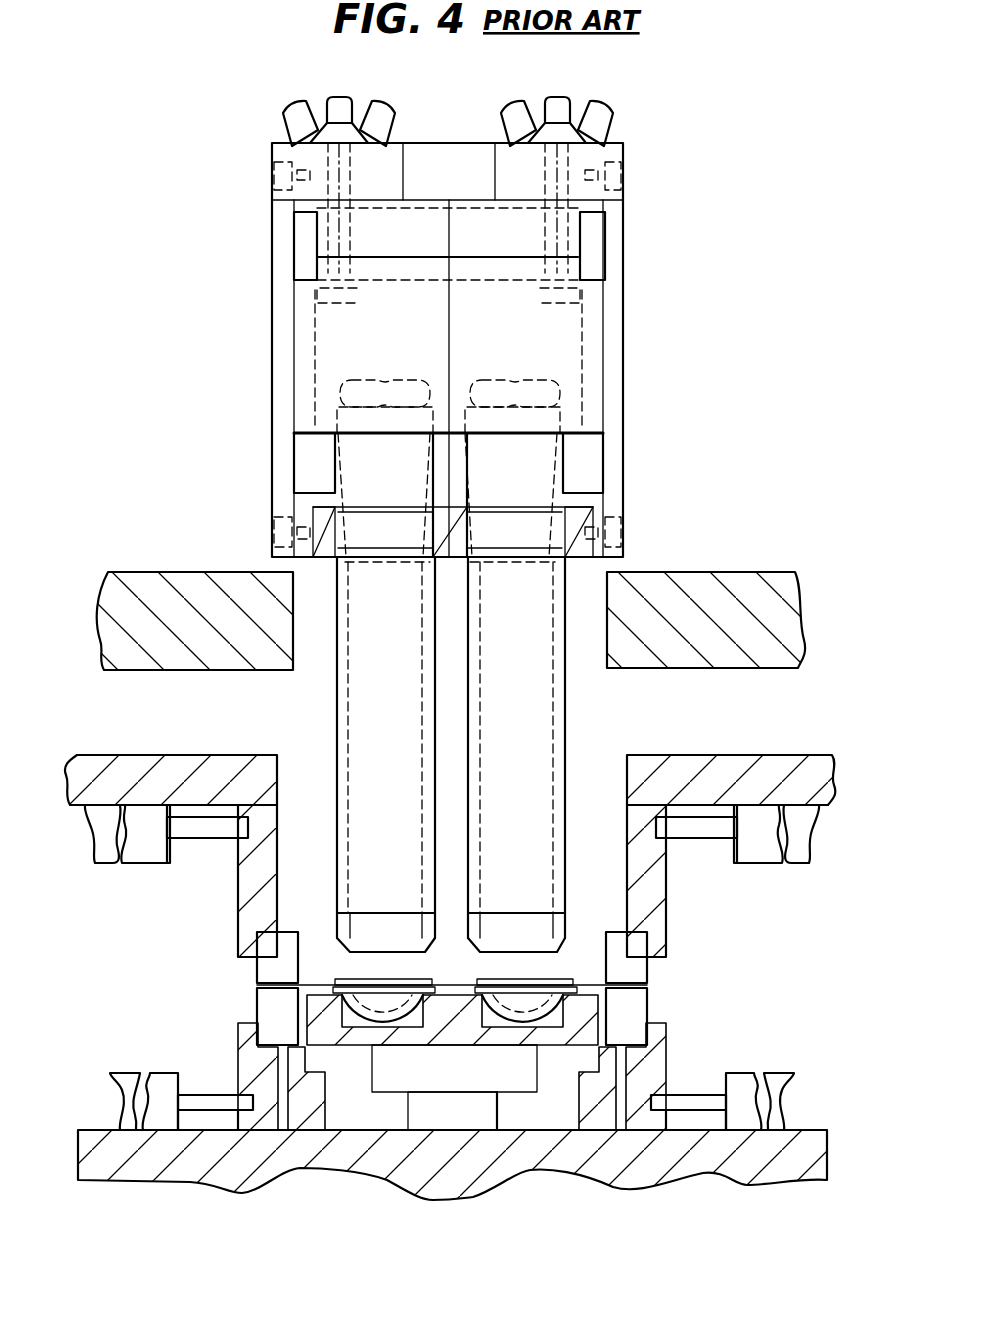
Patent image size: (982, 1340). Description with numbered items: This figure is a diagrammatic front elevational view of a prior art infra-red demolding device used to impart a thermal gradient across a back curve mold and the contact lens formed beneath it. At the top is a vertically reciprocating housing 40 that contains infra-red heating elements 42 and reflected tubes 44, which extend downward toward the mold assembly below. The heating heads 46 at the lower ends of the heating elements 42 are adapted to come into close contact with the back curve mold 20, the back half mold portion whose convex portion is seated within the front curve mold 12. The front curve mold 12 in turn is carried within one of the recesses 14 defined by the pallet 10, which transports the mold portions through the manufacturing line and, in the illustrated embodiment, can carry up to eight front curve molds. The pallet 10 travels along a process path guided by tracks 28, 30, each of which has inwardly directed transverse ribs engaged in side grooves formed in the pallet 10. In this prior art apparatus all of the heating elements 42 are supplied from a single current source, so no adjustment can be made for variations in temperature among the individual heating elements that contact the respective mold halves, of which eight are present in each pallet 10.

The pallet 10 is at (350, 1045).
The front curve mold 12 is at (435, 990).
The recesses 14 is at (395, 1028).
The back curve mold 20 is at (340, 977).
The track 28 is at (307, 1123).
The track 30 is at (602, 1110).
The vertically reciprocating housing 40 is at (625, 350).
The infra-red heating elements 42 is at (337, 718).
The reflected tubes 44 is at (565, 713).
The heating heads 46 is at (388, 925).